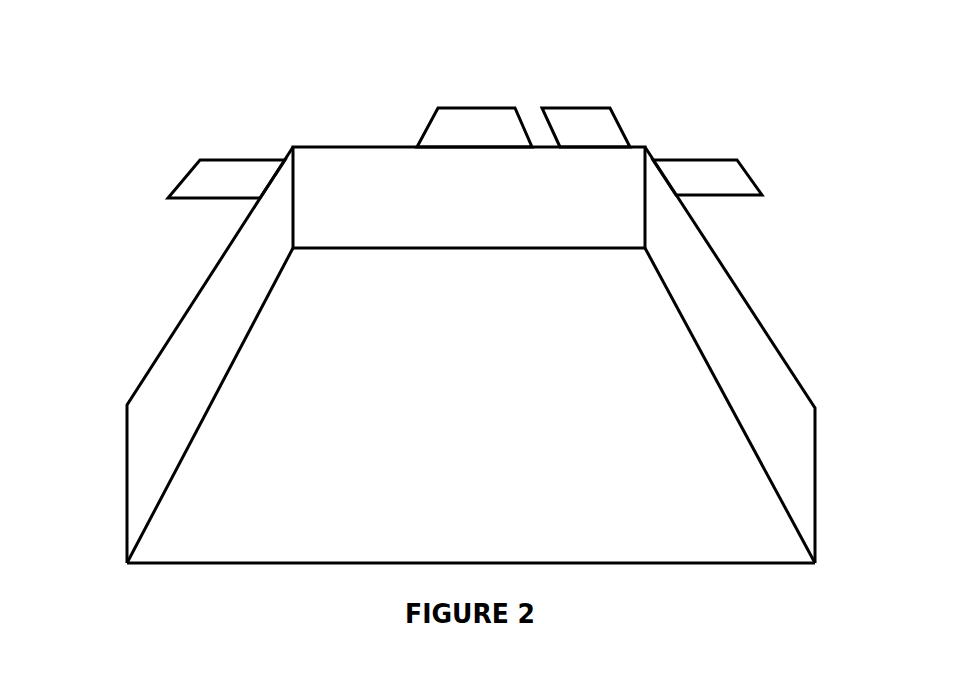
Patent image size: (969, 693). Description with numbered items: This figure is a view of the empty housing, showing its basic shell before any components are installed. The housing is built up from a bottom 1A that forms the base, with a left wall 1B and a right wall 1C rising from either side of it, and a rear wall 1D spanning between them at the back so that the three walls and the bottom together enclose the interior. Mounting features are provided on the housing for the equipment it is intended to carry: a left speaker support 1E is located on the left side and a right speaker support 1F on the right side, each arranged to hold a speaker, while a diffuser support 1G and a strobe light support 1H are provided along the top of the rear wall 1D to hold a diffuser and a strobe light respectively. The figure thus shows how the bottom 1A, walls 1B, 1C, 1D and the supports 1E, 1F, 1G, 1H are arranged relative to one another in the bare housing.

The bottom 1A is at (285, 534).
The left wall 1B is at (148, 464).
The right wall 1C is at (777, 457).
The rear wall 1D is at (362, 182).
The left speaker support 1E is at (202, 173).
The right speaker support 1F is at (695, 178).
The diffuser support 1G is at (465, 135).
The strobe light support 1H is at (585, 122).